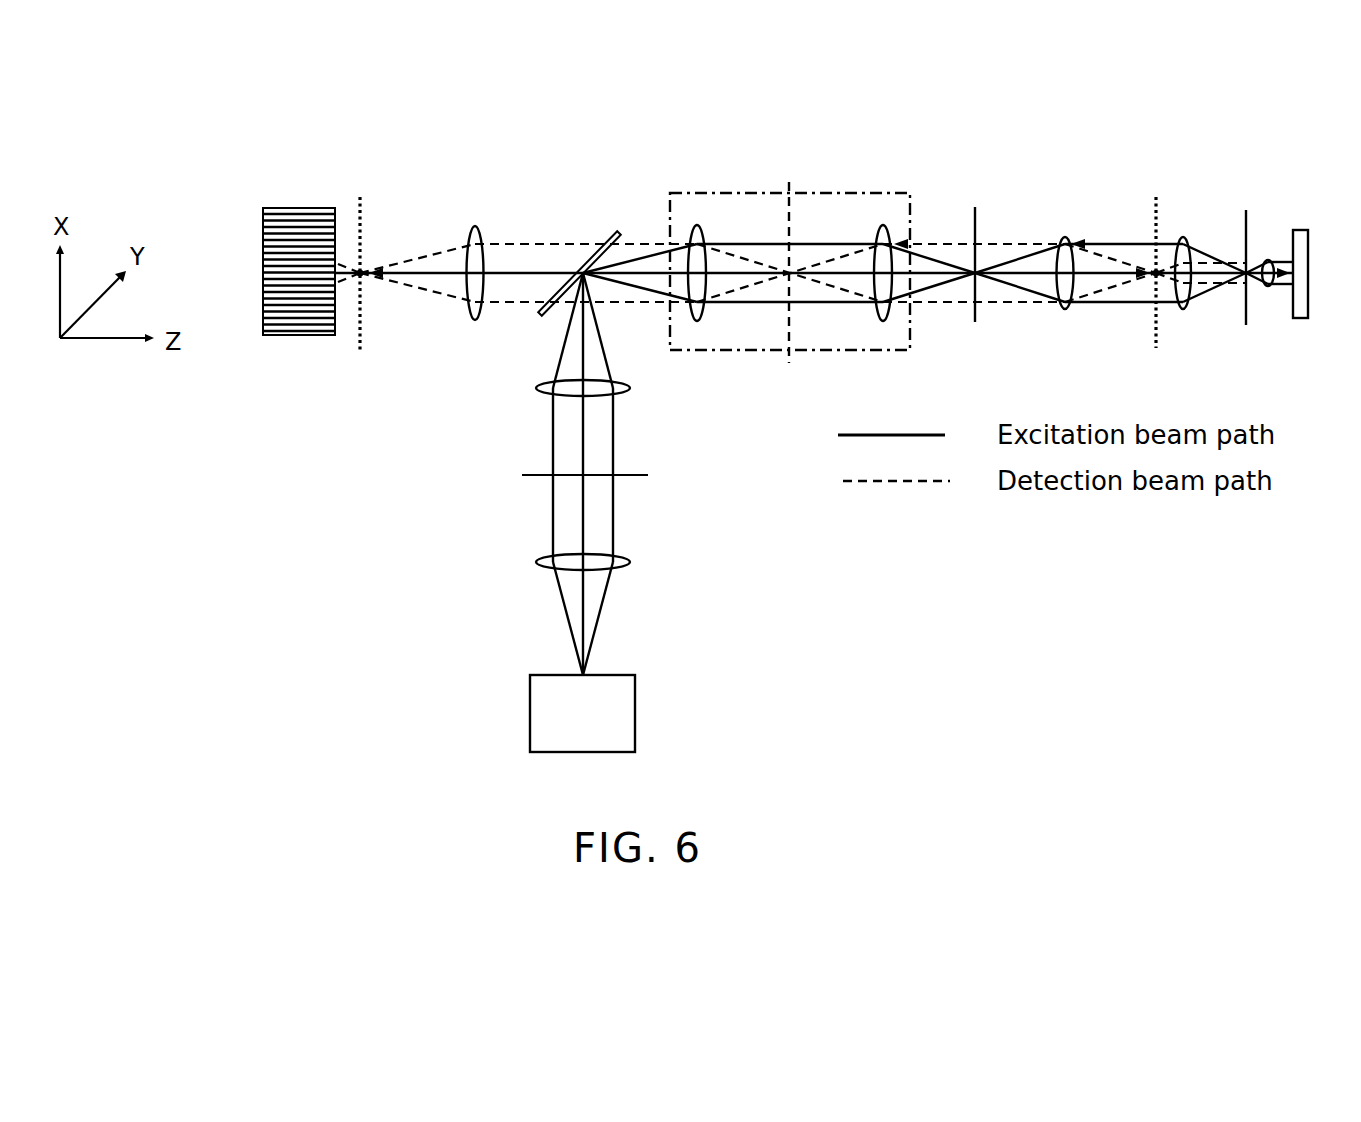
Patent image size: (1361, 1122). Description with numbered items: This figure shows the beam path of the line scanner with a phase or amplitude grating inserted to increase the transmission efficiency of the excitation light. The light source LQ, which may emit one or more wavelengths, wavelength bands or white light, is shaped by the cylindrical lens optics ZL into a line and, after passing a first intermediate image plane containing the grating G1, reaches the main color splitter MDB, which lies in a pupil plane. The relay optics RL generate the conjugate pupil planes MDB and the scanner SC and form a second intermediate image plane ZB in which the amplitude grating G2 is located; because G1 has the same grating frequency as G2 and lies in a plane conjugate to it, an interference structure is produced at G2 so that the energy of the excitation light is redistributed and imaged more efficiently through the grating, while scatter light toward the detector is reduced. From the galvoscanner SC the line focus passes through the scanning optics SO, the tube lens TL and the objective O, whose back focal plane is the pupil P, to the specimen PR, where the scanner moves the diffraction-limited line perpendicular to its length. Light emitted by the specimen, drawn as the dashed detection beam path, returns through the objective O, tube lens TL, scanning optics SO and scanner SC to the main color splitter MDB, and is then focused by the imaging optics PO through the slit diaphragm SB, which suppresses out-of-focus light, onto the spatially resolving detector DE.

The detector DE is at (275, 260).
The slit diaphragm SB is at (362, 253).
The imaging optics PO is at (468, 245).
The main color splitter MDB is at (579, 257).
The relay optics RL is at (790, 262).
The scanner SC is at (974, 246).
The scanning optics SO is at (1067, 257).
The intermediate image plane ZB is at (1153, 255).
The tube lens TL is at (1195, 260).
The pupil P is at (1239, 244).
The objective O is at (1269, 291).
The specimen PR is at (1322, 284).
The cylindrical lens optics ZL is at (604, 479).
The light source LQ is at (611, 714).